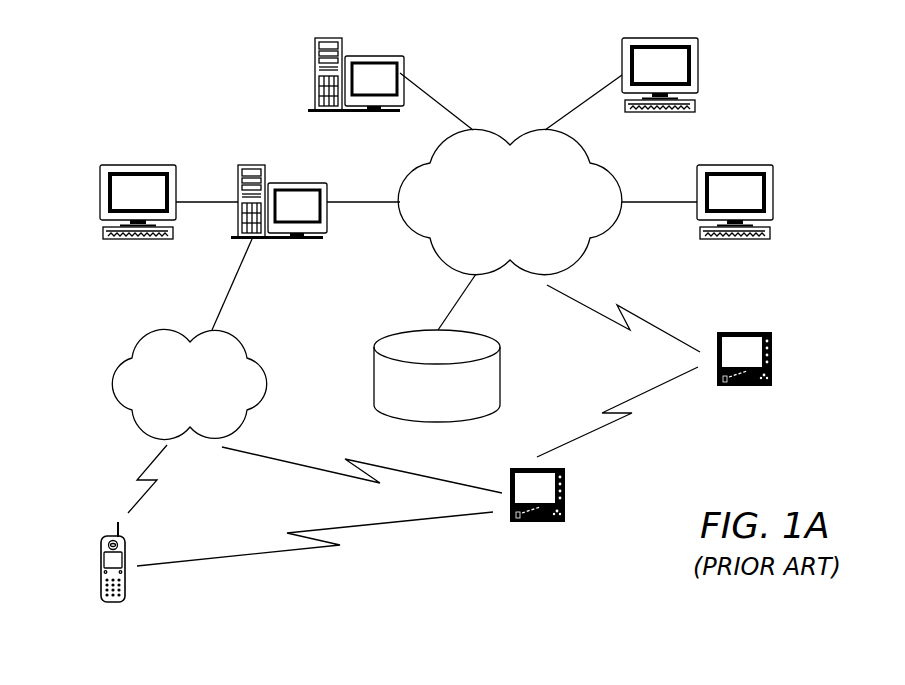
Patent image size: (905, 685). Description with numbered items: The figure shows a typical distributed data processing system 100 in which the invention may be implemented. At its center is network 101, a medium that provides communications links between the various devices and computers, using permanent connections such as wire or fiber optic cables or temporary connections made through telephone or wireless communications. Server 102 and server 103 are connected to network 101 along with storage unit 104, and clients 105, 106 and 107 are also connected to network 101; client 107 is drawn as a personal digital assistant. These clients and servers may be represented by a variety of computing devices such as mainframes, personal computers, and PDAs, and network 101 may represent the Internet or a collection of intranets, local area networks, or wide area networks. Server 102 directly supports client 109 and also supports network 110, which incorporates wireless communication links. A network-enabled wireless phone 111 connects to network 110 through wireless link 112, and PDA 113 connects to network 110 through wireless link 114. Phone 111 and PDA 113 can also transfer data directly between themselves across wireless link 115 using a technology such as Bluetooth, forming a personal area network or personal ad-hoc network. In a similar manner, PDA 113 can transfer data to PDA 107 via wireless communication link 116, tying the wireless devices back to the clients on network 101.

The distributed data processing system 100 is at (168, 88).
The network 101 is at (493, 225).
The server 102 is at (245, 163).
The server 103 is at (313, 78).
The storage unit 104 is at (372, 380).
The client 105 is at (698, 75).
The client 106 is at (773, 202).
The personal digital assistant 107 is at (773, 357).
The client 109 is at (137, 163).
The network 110 is at (173, 408).
The network-enabled phone 111 is at (125, 580).
The wireless link 112 is at (145, 497).
The personal digital assistant 113 is at (567, 493).
The wireless link 114 is at (273, 453).
The wireless link 115 is at (248, 553).
The wireless communication link 116 is at (592, 430).